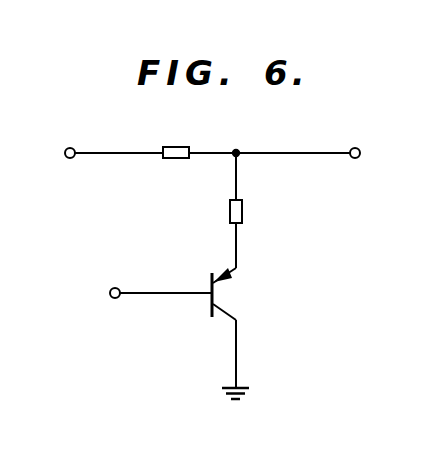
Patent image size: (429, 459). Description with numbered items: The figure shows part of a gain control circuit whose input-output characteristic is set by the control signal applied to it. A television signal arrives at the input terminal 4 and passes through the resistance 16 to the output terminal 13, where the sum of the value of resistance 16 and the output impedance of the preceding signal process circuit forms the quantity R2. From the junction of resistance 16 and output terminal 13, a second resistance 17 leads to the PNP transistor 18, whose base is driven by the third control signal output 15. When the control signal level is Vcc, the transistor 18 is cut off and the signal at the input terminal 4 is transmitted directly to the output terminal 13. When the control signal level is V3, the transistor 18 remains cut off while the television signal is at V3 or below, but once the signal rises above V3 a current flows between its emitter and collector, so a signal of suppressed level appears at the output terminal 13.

The first signal output 4 is at (66, 157).
The signal output 13 is at (356, 148).
The third control signal output 15 is at (112, 297).
The resistance 16 is at (176, 147).
The resistance 17 is at (243, 210).
The PNP transistor 18 is at (233, 295).